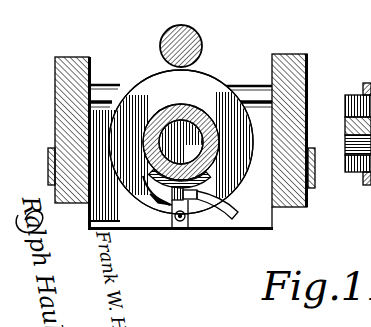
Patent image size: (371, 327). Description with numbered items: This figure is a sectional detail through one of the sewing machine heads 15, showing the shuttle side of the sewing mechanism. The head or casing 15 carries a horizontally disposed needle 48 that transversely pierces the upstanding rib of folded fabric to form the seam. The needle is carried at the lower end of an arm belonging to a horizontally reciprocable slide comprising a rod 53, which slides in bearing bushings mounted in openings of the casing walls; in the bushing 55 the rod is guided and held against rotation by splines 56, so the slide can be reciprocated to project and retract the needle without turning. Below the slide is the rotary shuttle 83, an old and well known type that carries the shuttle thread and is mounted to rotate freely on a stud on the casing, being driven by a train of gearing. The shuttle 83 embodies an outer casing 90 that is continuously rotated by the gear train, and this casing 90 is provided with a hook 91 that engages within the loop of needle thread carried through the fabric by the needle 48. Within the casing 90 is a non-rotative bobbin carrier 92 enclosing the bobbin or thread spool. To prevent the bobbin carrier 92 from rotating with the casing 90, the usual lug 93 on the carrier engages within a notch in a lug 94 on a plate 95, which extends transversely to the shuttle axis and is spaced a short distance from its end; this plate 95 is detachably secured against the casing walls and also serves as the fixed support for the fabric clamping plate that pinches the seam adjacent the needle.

The sewing machine head 15 is at (63, 100).
The needle 48 is at (179, 222).
The rod 53 is at (181, 35).
The bearing bushing 55 is at (367, 83).
The splines 56 is at (352, 96).
The rotary shuttle 83 is at (181, 142).
The outer casing 90 is at (151, 85).
The hook 91 is at (168, 206).
The bobbin carrier 92 is at (205, 193).
The lug 93 is at (190, 203).
The lug 94 is at (200, 201).
The plate 95 is at (255, 217).